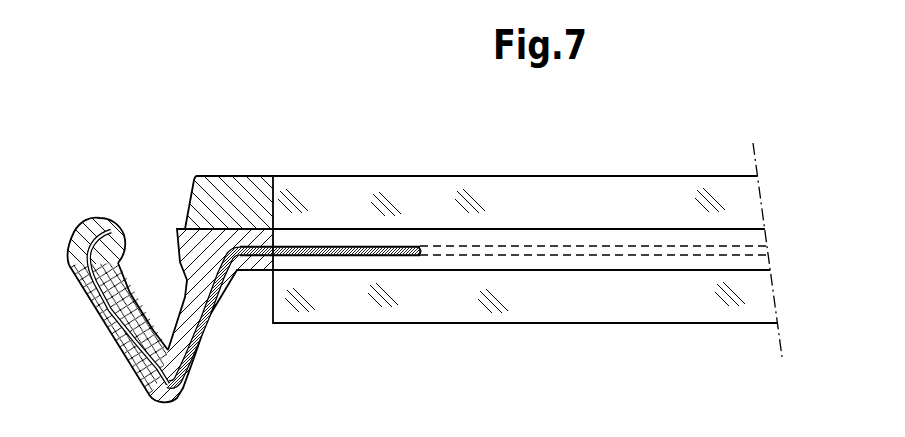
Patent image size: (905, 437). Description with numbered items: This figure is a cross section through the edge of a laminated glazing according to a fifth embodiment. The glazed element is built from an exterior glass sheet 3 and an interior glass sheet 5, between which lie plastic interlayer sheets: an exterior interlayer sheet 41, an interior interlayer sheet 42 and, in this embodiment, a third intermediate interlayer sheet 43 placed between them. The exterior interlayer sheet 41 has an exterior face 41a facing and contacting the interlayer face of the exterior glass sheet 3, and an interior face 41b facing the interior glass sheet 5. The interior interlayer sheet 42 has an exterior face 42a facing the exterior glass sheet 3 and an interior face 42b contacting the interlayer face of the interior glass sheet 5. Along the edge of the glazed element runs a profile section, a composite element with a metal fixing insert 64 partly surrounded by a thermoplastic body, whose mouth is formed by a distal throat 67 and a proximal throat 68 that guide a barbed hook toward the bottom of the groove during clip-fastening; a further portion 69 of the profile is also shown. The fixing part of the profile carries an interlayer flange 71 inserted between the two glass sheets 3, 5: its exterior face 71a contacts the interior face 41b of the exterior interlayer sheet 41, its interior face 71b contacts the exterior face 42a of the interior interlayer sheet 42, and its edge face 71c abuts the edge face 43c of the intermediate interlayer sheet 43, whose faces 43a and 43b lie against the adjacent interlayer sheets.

The exterior glass sheet 3 is at (612, 200).
The interior glass sheet 5 is at (675, 312).
The exterior interlayer sheet 41 is at (521, 205).
The exterior face of the exterior interlayer sheet 41a is at (640, 228).
The interior face of the exterior interlayer sheet 41b is at (598, 294).
The interior interlayer sheet 42 is at (547, 291).
The exterior face of the interior interlayer sheet 42a is at (482, 246).
The interior face of the interior interlayer sheet 42b is at (517, 272).
The intermediate interlayer sheet 43 is at (641, 196).
The upper face of insert element 43a is at (747, 230).
The lower face of insert element 43b is at (746, 274).
The edge face of the intermediate interlayer sheet 43c is at (412, 245).
The fixing insert 64 is at (105, 318).
The distal throat 67 is at (110, 230).
The proximal throat 68 is at (175, 237).
The spacer block 69 is at (233, 193).
The interlayer flange 71 is at (358, 233).
The exterior face of the interlayer flange 71a is at (332, 230).
The interior face of the interlayer flange 71b is at (357, 257).
The edge face of the interlayer flange 71c is at (412, 253).